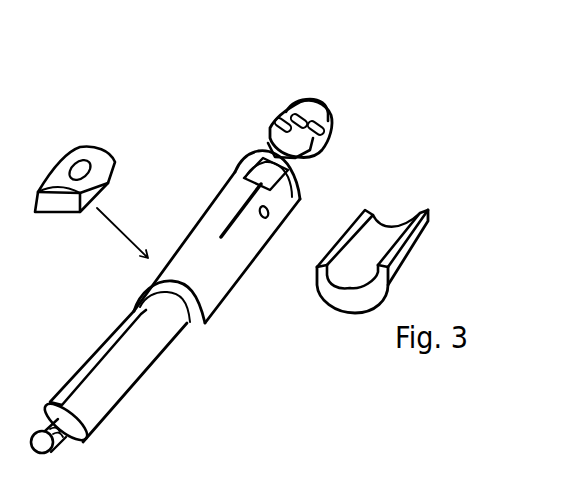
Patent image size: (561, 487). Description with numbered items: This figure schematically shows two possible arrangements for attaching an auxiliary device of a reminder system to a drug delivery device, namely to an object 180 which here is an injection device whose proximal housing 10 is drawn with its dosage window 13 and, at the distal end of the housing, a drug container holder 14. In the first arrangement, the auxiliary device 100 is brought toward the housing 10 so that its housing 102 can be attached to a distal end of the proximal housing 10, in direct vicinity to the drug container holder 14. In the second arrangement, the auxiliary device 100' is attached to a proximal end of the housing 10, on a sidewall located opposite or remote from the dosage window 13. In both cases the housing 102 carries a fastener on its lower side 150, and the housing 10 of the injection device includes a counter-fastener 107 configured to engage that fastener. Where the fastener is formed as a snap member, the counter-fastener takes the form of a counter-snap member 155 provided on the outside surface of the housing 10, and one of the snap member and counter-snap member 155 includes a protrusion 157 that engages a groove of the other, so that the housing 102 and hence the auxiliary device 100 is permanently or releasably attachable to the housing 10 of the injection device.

The housing 10 is at (230, 265).
The dosage window 13 is at (263, 160).
The drug container holder 14 is at (172, 322).
The auxiliary device 100 is at (90, 153).
The auxiliary device 100' is at (423, 208).
The housing 102 is at (445, 233).
The counter-fastener 107 is at (241, 193).
The lower side 150 is at (362, 265).
The counter-snap member 155 is at (267, 218).
The protrusion 157 is at (243, 210).
The object 180 is at (198, 124).